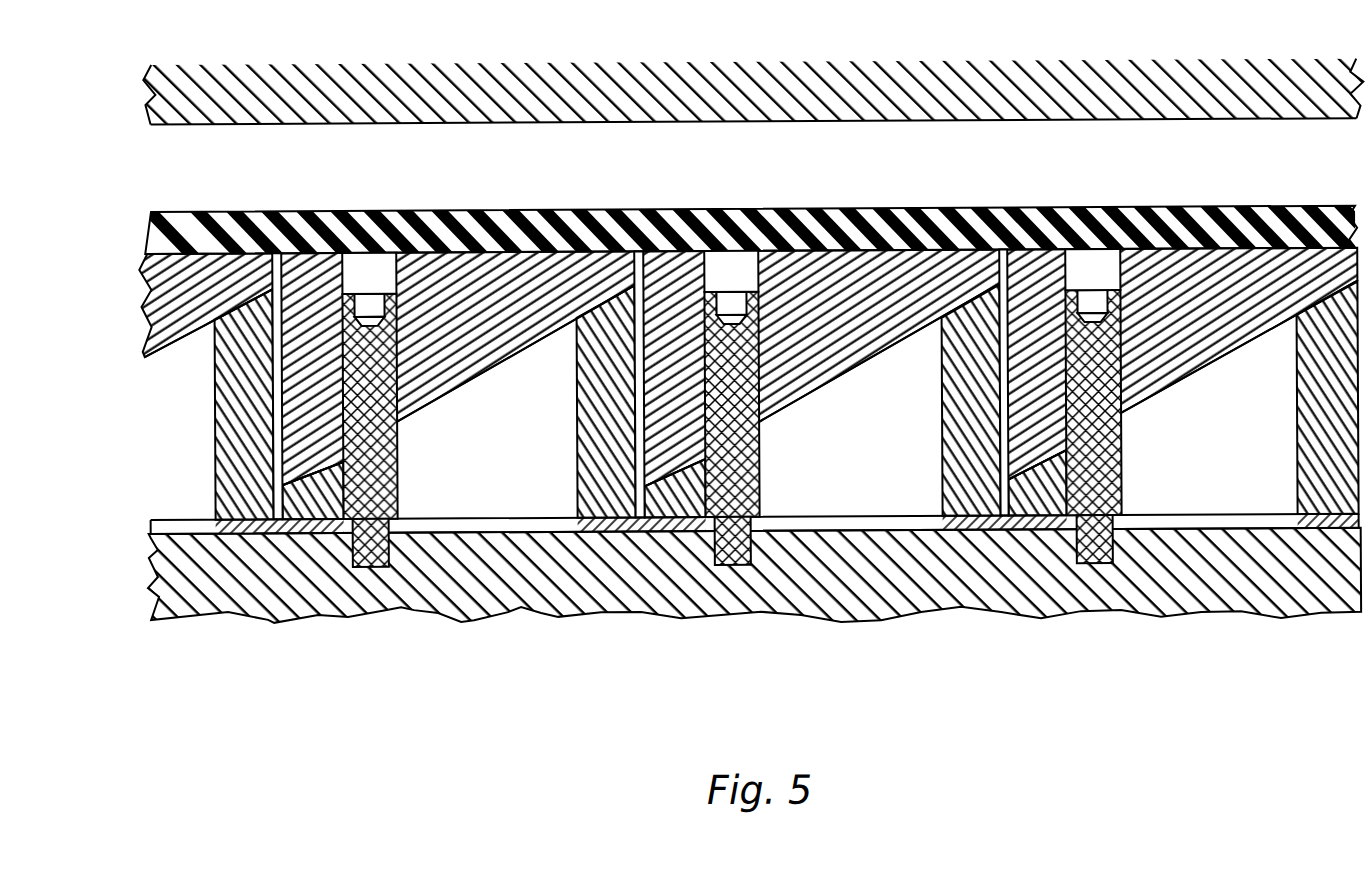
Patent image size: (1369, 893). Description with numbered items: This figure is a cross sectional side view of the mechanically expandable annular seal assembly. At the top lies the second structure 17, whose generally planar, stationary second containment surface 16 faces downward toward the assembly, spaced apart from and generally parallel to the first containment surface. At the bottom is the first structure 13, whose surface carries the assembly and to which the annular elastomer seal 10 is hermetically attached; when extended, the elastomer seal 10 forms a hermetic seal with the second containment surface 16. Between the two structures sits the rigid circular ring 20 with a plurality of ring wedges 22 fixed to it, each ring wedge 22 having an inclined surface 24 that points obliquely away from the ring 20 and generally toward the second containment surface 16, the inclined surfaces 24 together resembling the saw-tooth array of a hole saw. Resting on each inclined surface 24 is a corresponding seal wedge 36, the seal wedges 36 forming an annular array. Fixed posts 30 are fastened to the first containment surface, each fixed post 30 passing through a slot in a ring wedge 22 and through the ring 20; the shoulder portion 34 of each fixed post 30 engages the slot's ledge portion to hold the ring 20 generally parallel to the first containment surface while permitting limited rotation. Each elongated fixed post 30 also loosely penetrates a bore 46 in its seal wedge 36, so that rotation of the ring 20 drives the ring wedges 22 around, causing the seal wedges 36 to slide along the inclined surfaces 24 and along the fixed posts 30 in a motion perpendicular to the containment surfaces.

The annular elastomer seal 10 is at (863, 226).
The first structure 13 is at (190, 565).
The second containment surface 16 is at (412, 126).
The second structure 17 is at (230, 103).
The rigid circular ring 20 is at (282, 536).
The ring wedge 22 is at (618, 508).
The inclined surface 24 is at (860, 362).
The fixed post 30 is at (1085, 482).
The shoulder portion 34 is at (715, 521).
The seal wedge 36 is at (522, 282).
The bore 46 is at (1082, 270).